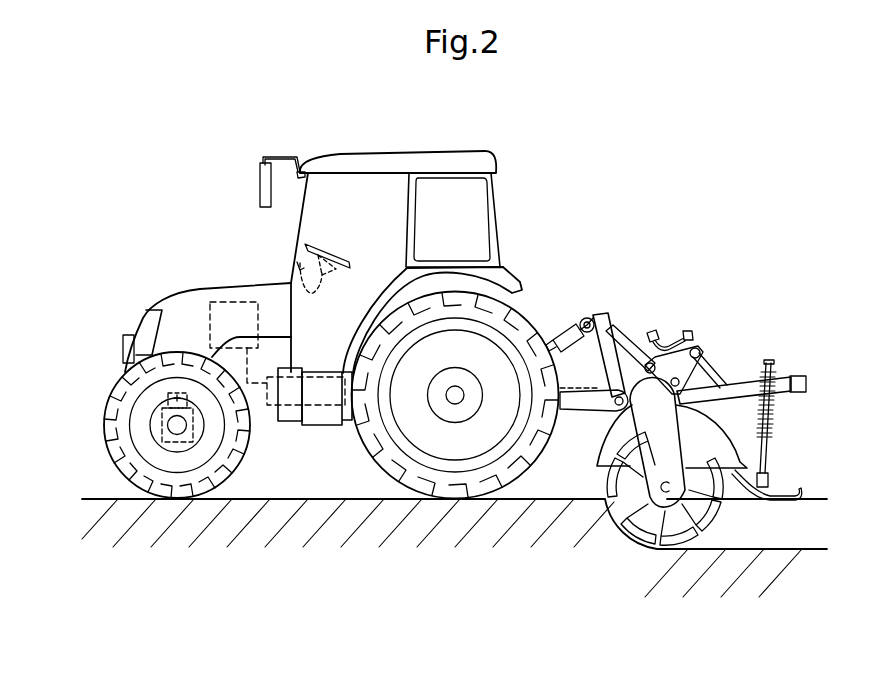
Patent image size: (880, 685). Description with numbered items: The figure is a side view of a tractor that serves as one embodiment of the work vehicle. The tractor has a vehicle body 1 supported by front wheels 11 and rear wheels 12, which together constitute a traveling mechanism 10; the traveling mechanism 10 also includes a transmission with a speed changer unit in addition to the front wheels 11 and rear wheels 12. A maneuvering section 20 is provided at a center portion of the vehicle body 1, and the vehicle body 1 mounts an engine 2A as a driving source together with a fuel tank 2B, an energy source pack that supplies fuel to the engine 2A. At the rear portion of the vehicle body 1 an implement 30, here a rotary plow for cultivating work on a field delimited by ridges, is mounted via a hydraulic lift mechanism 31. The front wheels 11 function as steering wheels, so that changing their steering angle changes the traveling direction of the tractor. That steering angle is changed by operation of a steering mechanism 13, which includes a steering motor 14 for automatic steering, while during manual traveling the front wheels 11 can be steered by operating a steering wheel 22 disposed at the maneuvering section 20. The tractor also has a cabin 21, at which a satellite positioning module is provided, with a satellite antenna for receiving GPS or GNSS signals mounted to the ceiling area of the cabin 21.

The vehicle body 1 is at (291, 437).
The engine 2A is at (235, 302).
The fuel tank 2B is at (322, 410).
The traveling mechanism 10 is at (343, 433).
The front wheels 11 is at (171, 490).
The rear wheels 12 is at (460, 498).
The steering mechanism 13 is at (160, 427).
The steering motor 14 is at (165, 403).
The maneuvering section 20 is at (353, 246).
The cabin 21 is at (476, 161).
The steering wheel 22 is at (318, 252).
The implement 30 is at (667, 535).
The hydraulic lift mechanism 31 is at (619, 309).